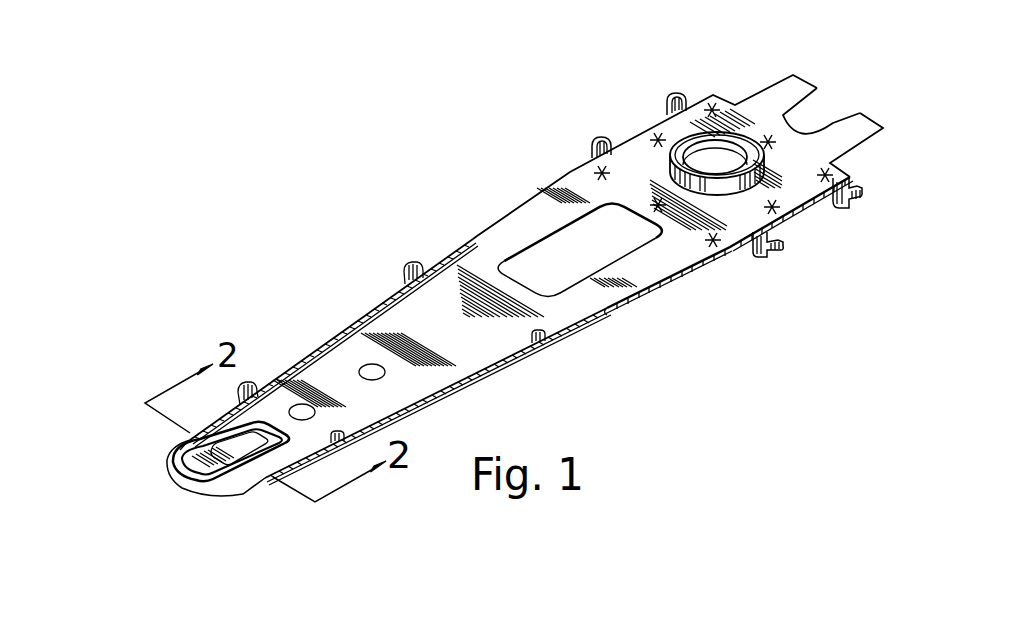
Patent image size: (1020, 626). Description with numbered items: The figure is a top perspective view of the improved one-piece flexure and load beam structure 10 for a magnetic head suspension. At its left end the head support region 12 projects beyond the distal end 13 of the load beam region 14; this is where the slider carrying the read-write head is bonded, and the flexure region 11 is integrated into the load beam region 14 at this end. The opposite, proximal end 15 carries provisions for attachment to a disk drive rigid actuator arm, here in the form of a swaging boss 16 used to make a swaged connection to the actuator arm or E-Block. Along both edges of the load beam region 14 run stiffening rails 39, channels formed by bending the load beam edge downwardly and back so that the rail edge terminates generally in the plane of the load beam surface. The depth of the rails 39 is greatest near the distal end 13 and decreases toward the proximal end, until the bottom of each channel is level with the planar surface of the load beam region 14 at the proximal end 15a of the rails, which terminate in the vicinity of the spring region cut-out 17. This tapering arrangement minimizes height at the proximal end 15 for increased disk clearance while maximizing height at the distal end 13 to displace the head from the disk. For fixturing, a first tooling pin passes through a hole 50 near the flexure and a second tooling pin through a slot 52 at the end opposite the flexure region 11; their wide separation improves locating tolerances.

The one-piece flexure and load beam structure 10 is at (350, 296).
The flexure region 11 is at (144, 462).
The head support region 12 is at (195, 477).
The distal end 13 is at (296, 440).
The load beam region 14 is at (462, 334).
The proximal end 15 is at (814, 223).
The proximal end of channels or rails 15a is at (607, 309).
The swaging boss 16 is at (713, 192).
The spring region cut-out 17 is at (603, 245).
The stiffening rail 39 is at (375, 288).
The hole 50 is at (368, 368).
The slot 52 is at (800, 128).